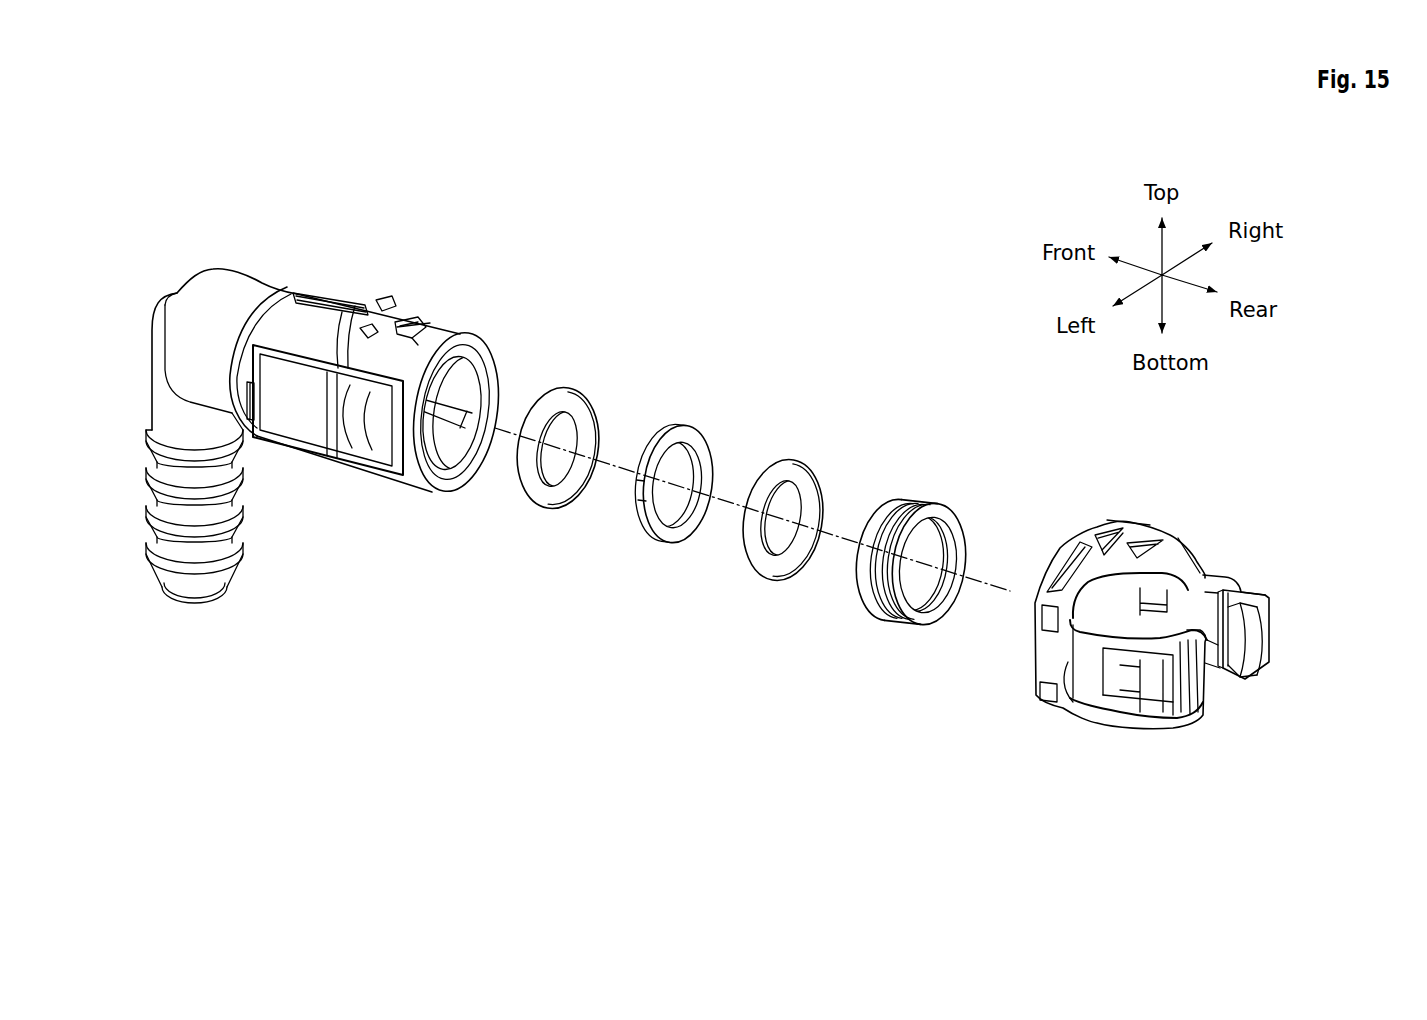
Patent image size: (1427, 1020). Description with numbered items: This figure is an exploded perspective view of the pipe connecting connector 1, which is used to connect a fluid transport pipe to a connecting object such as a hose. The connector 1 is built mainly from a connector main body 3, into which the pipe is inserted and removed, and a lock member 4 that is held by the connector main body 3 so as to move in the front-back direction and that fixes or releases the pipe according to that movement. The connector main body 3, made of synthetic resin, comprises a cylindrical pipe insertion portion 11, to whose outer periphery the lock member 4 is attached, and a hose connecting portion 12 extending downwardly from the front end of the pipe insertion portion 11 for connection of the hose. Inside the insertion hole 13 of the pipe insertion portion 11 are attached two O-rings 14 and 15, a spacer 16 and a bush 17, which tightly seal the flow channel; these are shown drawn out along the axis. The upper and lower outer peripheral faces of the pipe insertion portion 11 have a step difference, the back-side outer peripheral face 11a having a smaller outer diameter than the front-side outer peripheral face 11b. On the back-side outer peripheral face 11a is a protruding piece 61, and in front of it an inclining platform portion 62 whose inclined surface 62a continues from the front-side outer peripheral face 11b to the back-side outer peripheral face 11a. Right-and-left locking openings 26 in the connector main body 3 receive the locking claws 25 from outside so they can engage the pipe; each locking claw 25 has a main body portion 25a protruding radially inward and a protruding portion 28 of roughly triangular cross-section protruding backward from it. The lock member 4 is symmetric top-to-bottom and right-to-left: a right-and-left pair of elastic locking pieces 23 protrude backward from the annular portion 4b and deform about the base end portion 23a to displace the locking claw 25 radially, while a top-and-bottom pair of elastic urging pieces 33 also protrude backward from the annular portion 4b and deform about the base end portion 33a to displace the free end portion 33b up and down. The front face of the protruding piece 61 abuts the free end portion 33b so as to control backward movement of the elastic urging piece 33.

The pipe connecting connector 1 is at (882, 296).
The connector main body 3 is at (348, 404).
The lock member 4 is at (1172, 612).
The annular portion 4b is at (1038, 597).
The pipe insertion portion 11 is at (351, 377).
The back-side outer peripheral face 11a is at (463, 328).
The front-side outer peripheral face 11b is at (289, 310).
The hose connecting portion 12 is at (222, 571).
The insertion hole 13 is at (428, 468).
The O-ring 14 is at (578, 388).
The O-ring 15 is at (802, 459).
The spacer 16 is at (705, 428).
The bush 17 is at (937, 500).
The elastic locking piece 23 is at (1232, 570).
The base end portion 23a is at (1073, 695).
The locking claw 25 is at (1200, 685).
The main body portion 25a is at (1237, 608).
The locking opening 26 is at (463, 385).
The protruding portion 28 is at (1270, 653).
The elastic urging piece 33 is at (1190, 511).
The base end portion 33a is at (1130, 527).
The free end portion 33b is at (1197, 566).
The protruding piece 61 is at (420, 322).
The inclining platform portion 62 is at (372, 340).
The inclined surface 62a is at (378, 328).